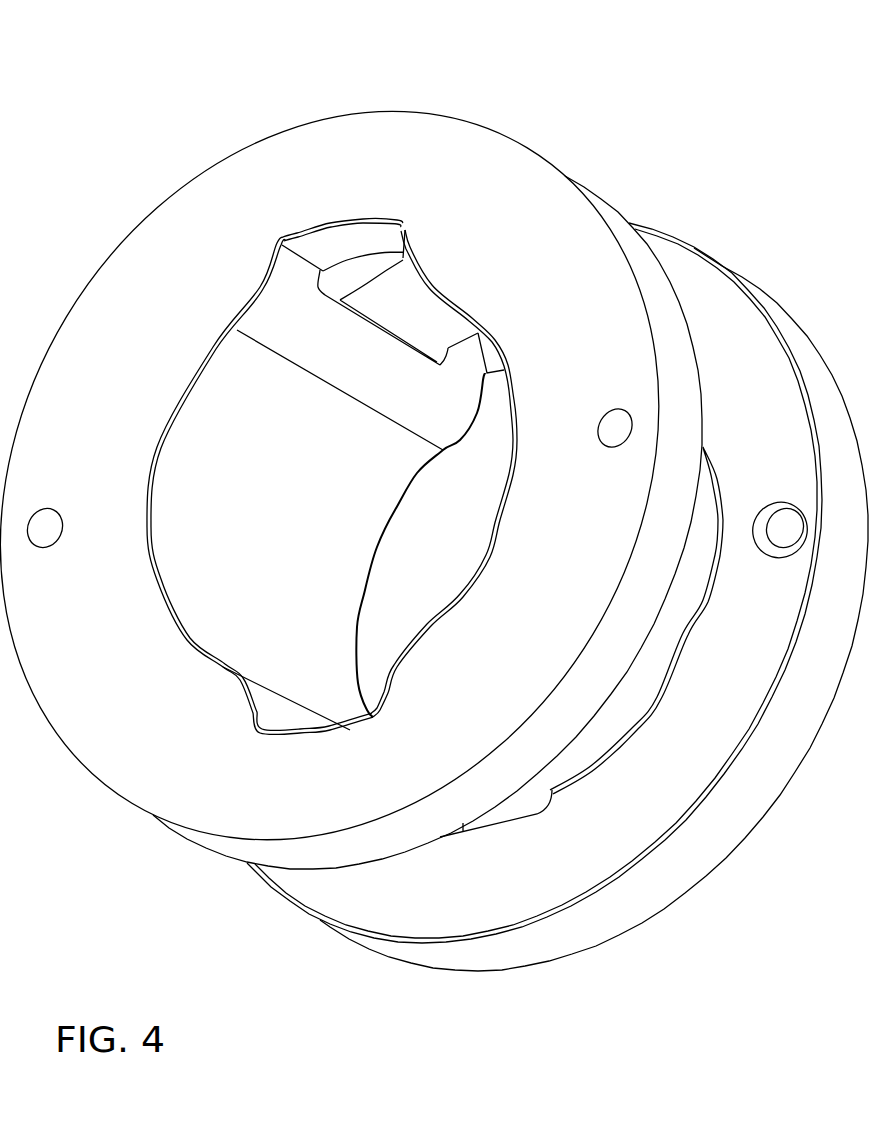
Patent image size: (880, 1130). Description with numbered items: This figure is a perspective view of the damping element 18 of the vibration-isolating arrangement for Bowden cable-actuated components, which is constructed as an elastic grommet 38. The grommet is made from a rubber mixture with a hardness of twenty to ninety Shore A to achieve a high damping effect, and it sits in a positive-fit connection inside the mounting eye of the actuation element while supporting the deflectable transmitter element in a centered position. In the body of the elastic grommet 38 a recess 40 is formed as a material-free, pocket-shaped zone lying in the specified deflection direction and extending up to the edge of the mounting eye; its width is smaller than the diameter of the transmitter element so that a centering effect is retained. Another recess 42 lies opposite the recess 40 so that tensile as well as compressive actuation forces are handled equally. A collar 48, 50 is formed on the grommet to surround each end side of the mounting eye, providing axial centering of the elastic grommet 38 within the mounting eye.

The damping element 18 is at (631, 78).
The elastic grommet 38 is at (210, 528).
The recess 40 is at (502, 817).
The another recess 42 is at (335, 248).
The collar 48 is at (152, 262).
The collar 50 is at (650, 895).